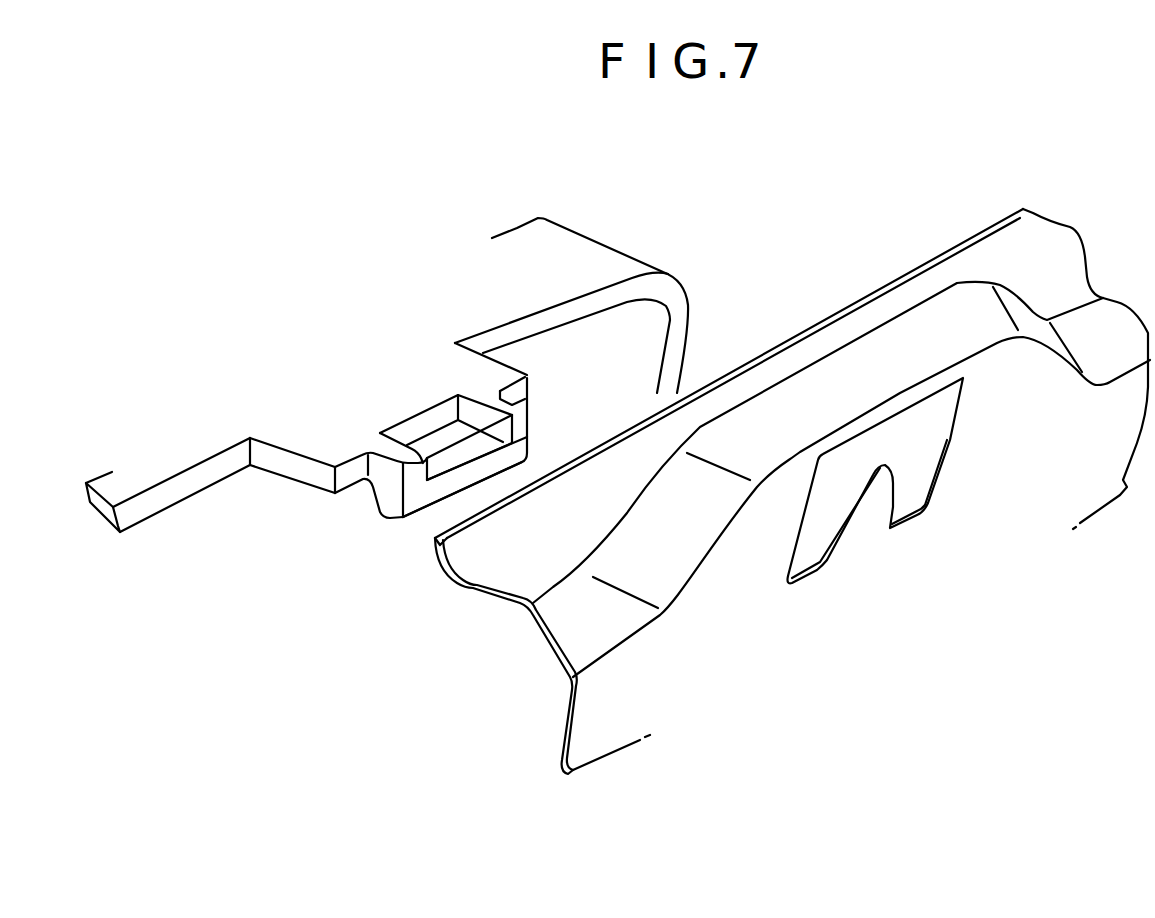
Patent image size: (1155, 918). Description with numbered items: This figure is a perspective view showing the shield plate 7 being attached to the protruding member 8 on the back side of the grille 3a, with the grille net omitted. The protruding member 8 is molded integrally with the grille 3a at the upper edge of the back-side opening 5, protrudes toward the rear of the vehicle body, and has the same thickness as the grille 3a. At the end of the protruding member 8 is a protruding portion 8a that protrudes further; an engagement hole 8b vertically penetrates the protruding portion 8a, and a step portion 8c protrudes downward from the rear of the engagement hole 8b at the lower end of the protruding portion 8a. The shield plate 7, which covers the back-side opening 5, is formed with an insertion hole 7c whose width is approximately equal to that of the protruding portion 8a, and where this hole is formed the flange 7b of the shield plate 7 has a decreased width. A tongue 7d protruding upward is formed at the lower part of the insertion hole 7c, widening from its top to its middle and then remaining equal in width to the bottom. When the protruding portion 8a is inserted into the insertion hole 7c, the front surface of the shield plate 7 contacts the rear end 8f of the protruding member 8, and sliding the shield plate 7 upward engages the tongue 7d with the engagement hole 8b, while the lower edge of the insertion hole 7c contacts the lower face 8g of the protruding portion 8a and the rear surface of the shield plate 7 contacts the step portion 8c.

The grille 3a is at (550, 292).
The back-side opening 5 is at (217, 503).
The shield plate 7 is at (913, 252).
The flange 7b is at (1002, 247).
The insertion hole 7c is at (928, 453).
The tongue 7d is at (880, 503).
The protruding member 8 is at (300, 445).
The protruding portion 8a is at (512, 401).
The engagement hole 8b is at (437, 438).
The step portion 8c is at (425, 498).
The rear end 8f is at (348, 467).
The lower face 8g is at (370, 483).